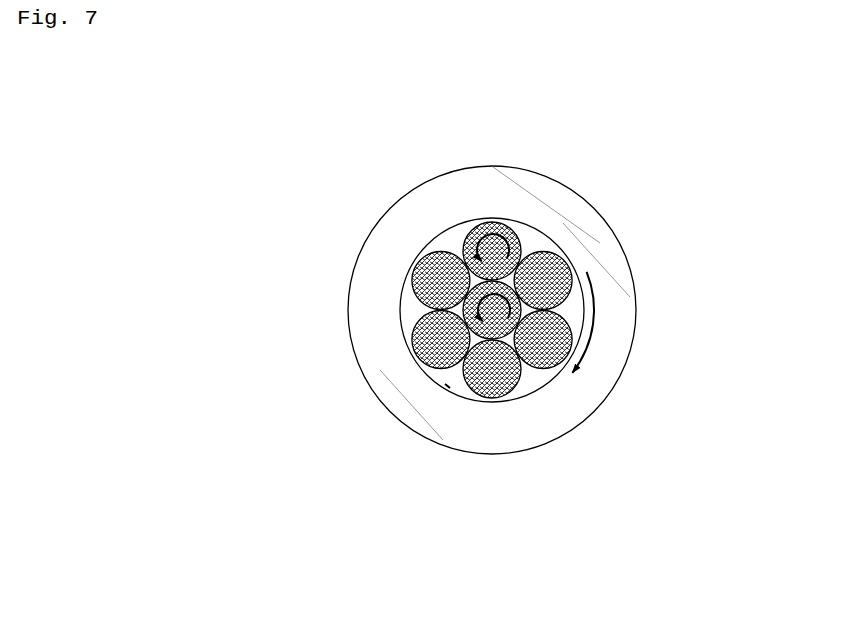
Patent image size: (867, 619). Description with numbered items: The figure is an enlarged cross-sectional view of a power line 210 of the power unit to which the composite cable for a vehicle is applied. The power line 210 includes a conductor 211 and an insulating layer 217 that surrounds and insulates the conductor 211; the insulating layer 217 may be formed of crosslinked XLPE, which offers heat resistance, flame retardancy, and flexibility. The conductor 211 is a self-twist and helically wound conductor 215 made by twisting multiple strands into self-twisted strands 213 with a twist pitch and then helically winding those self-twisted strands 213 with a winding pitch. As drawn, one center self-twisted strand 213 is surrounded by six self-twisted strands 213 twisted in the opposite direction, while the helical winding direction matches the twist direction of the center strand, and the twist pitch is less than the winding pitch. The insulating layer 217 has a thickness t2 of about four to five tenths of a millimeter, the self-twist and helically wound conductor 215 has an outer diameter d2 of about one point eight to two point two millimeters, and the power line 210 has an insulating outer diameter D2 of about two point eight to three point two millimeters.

The power line 210 is at (621, 190).
The conductor 211 is at (591, 318).
The self-twisted strands 213 is at (541, 376).
The self-twist and helically wound conductor 215 is at (430, 383).
The insulating layer 217 is at (624, 257).
The outer diameter of the self-twist and helically wound conductor d2 is at (587, 256).
The insulating outer diameter D2 is at (637, 517).
The thickness of the insulating layer t2 is at (415, 256).